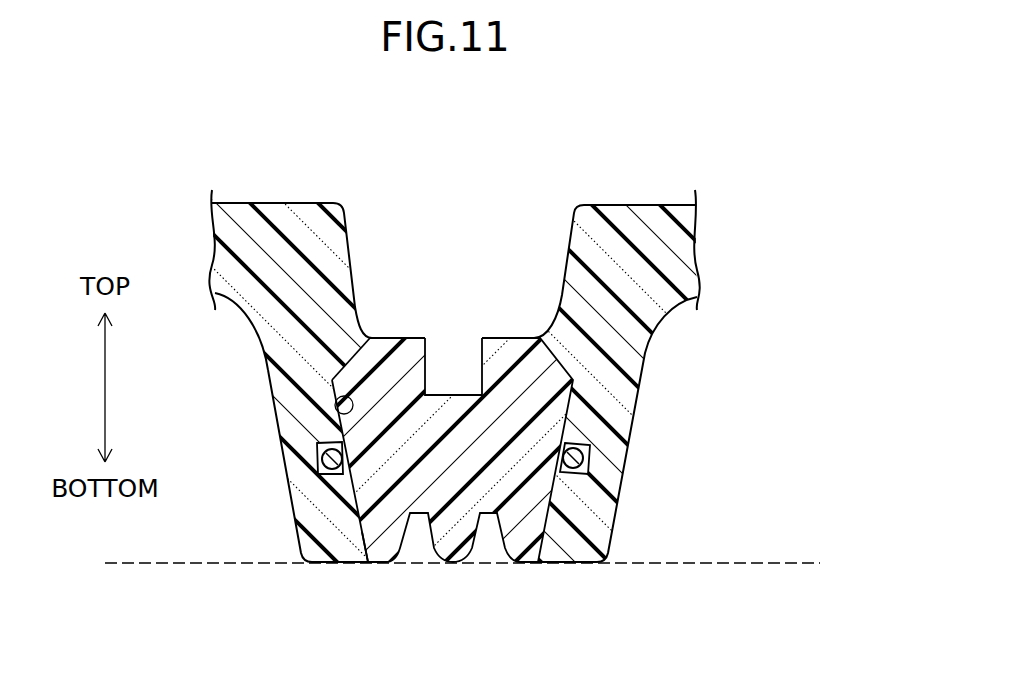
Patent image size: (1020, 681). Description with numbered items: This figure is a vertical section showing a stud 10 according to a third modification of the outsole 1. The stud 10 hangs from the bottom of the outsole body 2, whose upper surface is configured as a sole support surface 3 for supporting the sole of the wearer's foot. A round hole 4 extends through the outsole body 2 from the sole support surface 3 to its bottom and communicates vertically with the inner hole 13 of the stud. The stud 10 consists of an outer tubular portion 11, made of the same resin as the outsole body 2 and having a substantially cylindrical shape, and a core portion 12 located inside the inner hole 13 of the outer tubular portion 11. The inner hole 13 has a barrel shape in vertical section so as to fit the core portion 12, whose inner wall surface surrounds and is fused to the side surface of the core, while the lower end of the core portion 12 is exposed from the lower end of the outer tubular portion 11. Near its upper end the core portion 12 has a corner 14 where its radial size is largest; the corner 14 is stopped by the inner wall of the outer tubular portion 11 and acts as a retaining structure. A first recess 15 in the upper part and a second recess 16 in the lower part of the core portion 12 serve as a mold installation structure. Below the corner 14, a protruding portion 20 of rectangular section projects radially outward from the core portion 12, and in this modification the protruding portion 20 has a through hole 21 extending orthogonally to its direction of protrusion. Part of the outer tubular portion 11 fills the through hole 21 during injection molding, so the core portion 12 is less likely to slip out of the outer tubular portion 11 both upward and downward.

The outsole 1 is at (457, 163).
The outsole body 2 is at (273, 204).
The sole support surface 3 is at (628, 205).
The round hole 4 is at (348, 272).
The stud 10 is at (369, 564).
The outer tubular portion 11 is at (312, 512).
The core portion 12 is at (548, 410).
The inner hole 13 is at (338, 408).
The corner 14 is at (333, 380).
The first recess 15 is at (452, 393).
The second recess 16 is at (487, 536).
The protruding portion 20 is at (320, 459).
The through hole 21 is at (317, 468).